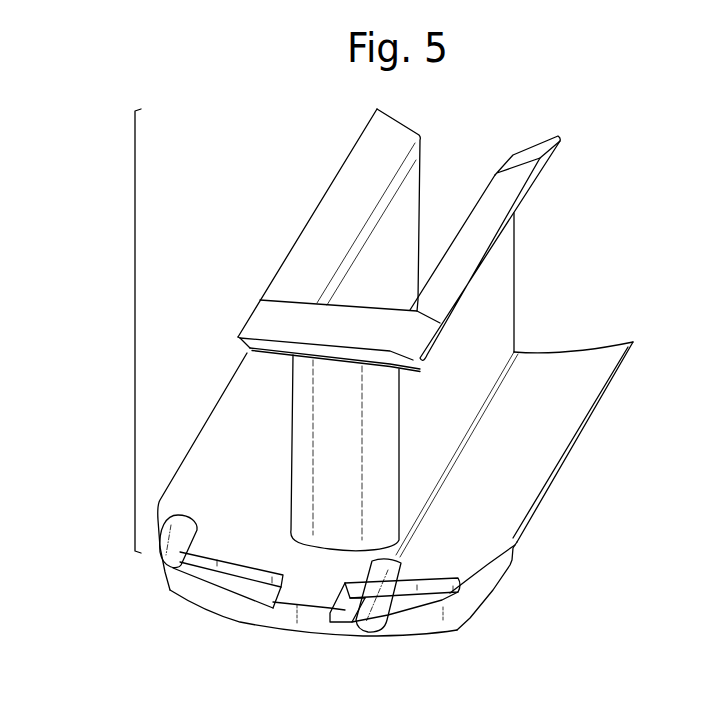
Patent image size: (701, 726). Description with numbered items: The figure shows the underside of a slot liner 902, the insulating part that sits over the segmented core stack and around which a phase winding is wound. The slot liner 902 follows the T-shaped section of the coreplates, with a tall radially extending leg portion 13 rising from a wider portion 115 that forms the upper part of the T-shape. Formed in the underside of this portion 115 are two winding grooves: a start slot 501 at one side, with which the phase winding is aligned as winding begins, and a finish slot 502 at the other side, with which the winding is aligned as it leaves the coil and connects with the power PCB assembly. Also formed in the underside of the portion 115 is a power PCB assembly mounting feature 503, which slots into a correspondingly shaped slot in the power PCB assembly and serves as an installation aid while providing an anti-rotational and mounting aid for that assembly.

The leg portion 13 is at (514, 280).
The portion of the slot liner forming the upper part of the T-shape 115 is at (197, 605).
The start winding slot 501 is at (162, 560).
The finish winding slot 502 is at (402, 563).
The power PCB assembly mounting feature 503 is at (287, 607).
The slot liner 902 is at (135, 329).